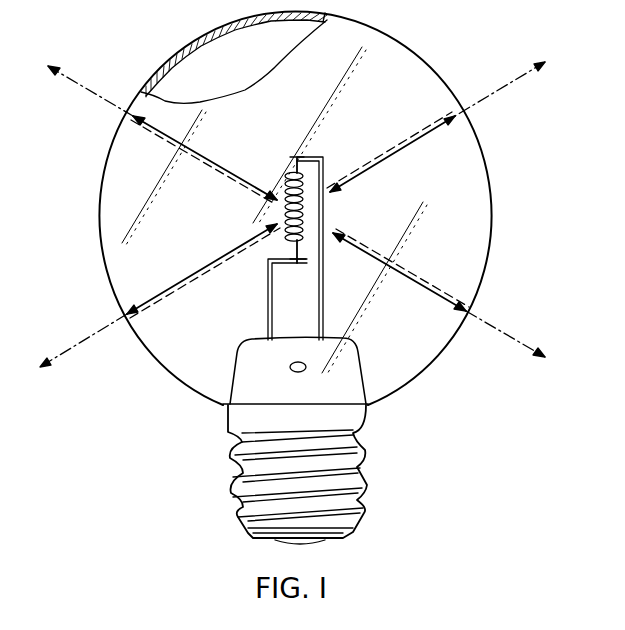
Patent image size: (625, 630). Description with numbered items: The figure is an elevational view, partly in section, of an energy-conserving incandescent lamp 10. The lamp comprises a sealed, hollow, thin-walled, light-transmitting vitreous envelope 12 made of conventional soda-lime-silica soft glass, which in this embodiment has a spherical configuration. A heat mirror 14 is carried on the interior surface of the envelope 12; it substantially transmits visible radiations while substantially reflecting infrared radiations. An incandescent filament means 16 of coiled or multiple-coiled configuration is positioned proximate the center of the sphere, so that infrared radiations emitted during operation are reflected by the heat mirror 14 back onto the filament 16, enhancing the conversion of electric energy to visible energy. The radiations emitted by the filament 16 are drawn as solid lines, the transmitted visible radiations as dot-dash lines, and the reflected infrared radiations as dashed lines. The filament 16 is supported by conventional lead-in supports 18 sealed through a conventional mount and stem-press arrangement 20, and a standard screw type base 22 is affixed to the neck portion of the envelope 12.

The incandescent lamp 10 is at (529, 159).
The envelope 12 is at (423, 62).
The heat mirror 14 is at (208, 44).
The incandescent filament means 16 is at (284, 184).
The lead-in supports 18 is at (320, 296).
The mount and stem-press arrangement 20 is at (252, 365).
The screw type base 22 is at (355, 453).